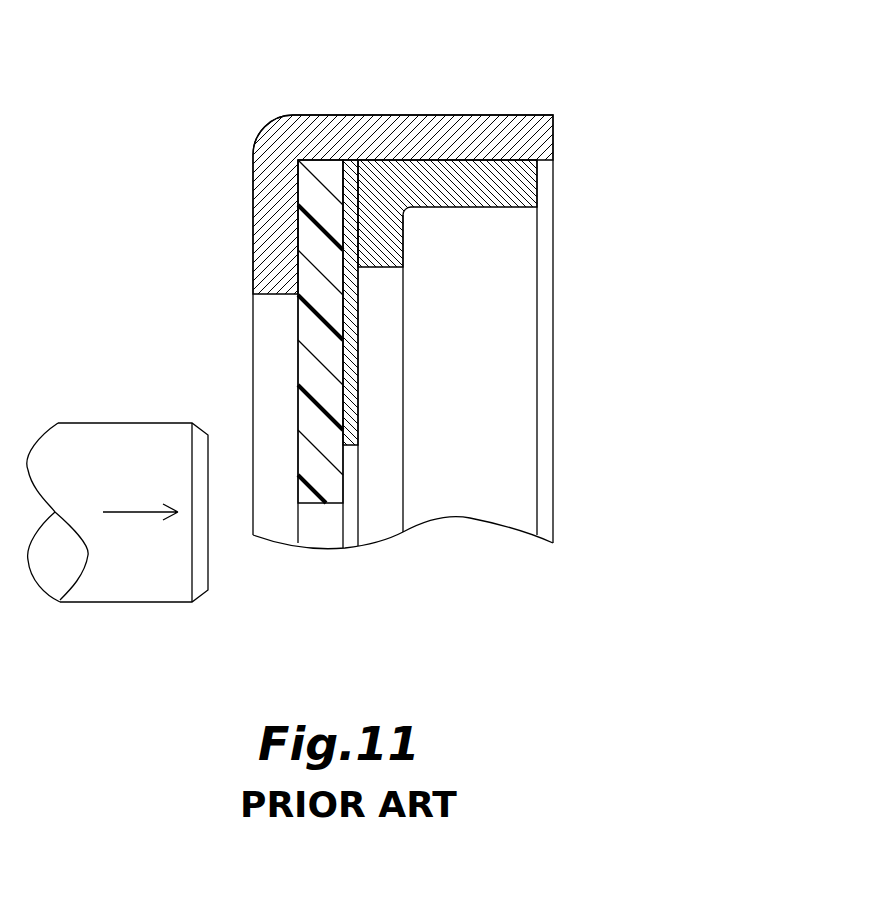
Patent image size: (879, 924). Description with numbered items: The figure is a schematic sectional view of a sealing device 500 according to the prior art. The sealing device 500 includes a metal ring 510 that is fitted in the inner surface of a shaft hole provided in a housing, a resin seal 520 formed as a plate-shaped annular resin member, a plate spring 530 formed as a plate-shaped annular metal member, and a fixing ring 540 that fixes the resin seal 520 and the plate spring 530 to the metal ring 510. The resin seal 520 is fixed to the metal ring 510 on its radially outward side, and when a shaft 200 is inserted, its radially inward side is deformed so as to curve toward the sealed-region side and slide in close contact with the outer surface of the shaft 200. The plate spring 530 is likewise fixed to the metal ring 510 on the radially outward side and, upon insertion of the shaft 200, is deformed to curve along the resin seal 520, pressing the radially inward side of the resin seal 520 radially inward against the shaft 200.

The sealing device 500 is at (588, 108).
The metal ring 510 is at (350, 108).
The resin seal 520 is at (315, 325).
The plate spring 530 is at (358, 383).
The fixing ring 540 is at (455, 220).
The shaft 200 is at (117, 512).